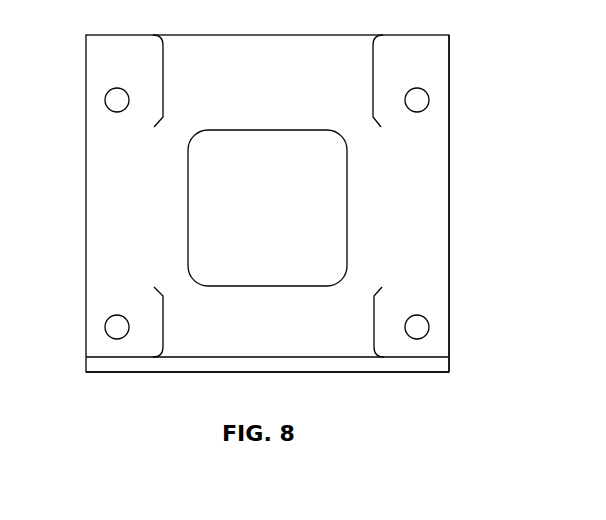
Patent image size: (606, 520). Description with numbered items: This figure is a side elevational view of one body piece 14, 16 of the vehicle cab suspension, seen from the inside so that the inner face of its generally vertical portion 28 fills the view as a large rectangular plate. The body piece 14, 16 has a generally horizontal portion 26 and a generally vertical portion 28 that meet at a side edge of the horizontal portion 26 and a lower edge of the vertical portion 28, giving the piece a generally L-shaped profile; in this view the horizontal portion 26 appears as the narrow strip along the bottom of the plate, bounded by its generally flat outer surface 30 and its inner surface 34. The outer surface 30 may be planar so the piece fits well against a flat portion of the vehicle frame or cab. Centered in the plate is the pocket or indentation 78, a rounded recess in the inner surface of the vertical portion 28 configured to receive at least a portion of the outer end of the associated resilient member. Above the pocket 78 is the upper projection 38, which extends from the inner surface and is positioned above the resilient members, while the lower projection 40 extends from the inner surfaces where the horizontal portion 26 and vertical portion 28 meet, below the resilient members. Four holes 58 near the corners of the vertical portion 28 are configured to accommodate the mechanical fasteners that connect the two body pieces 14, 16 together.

The body piece 14 is at (228, 203).
The body piece 16 is at (76, 175).
The generally horizontal portion 26 is at (443, 365).
The generally vertical portion 28 is at (483, 203).
The outer surface 30 is at (342, 373).
The inner surface 34 is at (97, 357).
The upper projection 38 is at (281, 94).
The lower projection 40 is at (281, 336).
The holes 58 is at (105, 99).
The pocket or indentation 78 is at (281, 214).